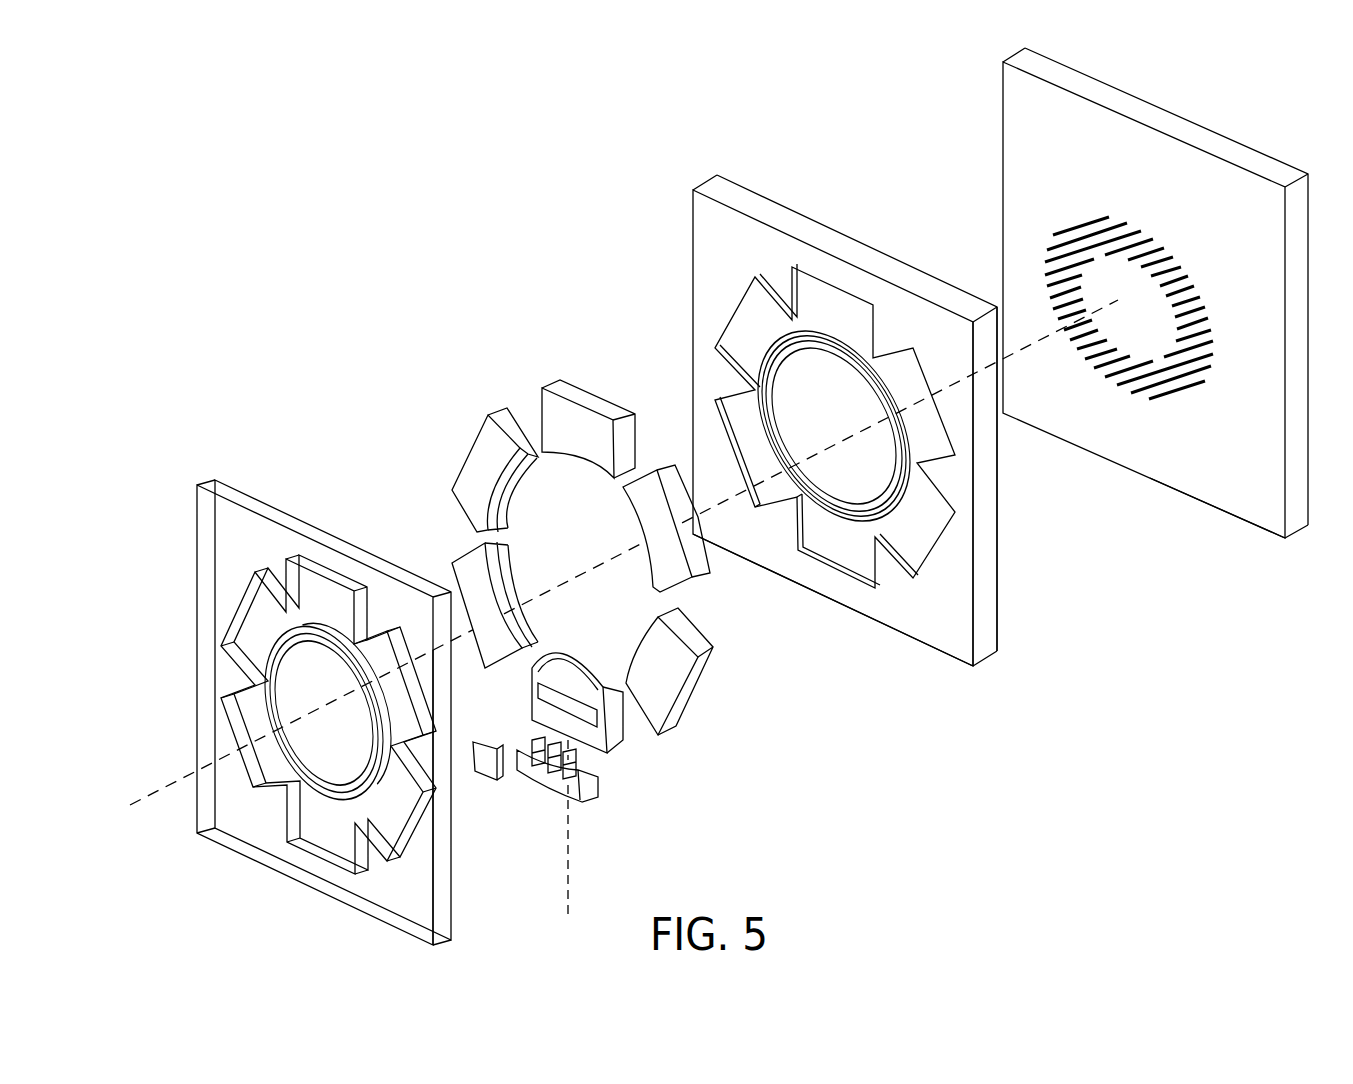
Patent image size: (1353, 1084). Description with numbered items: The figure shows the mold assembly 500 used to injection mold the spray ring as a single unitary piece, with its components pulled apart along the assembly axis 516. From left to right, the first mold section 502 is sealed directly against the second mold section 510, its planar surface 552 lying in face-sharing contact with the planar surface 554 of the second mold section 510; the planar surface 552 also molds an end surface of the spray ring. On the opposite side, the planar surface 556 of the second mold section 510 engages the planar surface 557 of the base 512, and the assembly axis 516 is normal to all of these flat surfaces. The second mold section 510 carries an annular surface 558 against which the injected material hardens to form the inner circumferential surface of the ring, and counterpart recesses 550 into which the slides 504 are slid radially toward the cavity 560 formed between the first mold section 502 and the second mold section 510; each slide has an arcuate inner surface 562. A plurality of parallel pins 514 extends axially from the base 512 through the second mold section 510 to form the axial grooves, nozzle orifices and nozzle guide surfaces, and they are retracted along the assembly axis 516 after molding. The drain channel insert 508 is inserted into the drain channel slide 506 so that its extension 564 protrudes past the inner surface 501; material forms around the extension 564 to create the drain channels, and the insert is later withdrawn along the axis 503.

The mold assembly 500 is at (528, 110).
The inner surface 501 is at (565, 665).
The first mold section 502 is at (268, 503).
The axis 503 is at (562, 823).
The slides 504 is at (554, 521).
The drain channel slide 506 is at (580, 767).
The drain channel insert 508 is at (583, 813).
The second mold section 510 is at (889, 423).
The base 512 is at (1155, 310).
The pins 514 is at (1135, 220).
The assembly axis 516 is at (165, 782).
The counterpart recesses 550 is at (915, 545).
The planar surface 552 is at (455, 888).
The planar surface 554 is at (893, 603).
The planar surface 556 is at (1005, 634).
The planar surface 557 is at (1262, 495).
The annular surface 558 is at (829, 332).
The cavity 560 is at (842, 506).
The arcuate inner surface 562 is at (503, 492).
The extension 564 is at (590, 776).